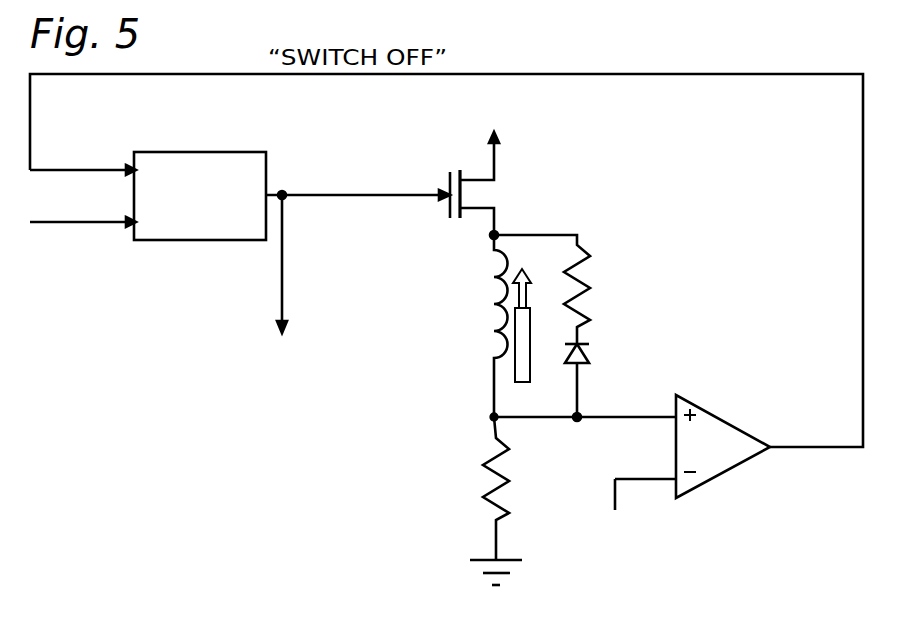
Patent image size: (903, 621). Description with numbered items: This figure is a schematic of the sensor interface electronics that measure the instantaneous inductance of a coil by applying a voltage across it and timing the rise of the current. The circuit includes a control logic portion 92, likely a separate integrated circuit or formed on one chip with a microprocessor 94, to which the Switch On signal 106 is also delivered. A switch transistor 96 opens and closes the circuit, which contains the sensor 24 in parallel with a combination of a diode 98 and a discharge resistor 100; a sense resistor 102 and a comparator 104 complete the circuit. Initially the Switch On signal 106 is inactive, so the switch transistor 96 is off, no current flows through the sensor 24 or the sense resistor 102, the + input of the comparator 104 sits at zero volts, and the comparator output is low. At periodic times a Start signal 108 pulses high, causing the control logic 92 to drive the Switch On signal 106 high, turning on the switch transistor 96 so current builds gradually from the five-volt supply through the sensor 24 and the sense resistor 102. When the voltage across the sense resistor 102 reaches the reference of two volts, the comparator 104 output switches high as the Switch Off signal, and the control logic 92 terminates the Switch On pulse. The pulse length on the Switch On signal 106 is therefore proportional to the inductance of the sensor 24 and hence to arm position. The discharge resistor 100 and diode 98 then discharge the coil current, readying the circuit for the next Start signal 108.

The sensor 24 is at (472, 359).
The control logic 92 is at (203, 241).
The microprocessor 94 is at (284, 305).
The switch transistor 96 is at (447, 144).
The diode 98 is at (589, 352).
The discharge resistor 100 is at (589, 255).
The sense resistor 102 is at (482, 497).
The comparator 104 is at (700, 487).
The Switch On signal 106 is at (292, 199).
The Start signal 108 is at (80, 225).